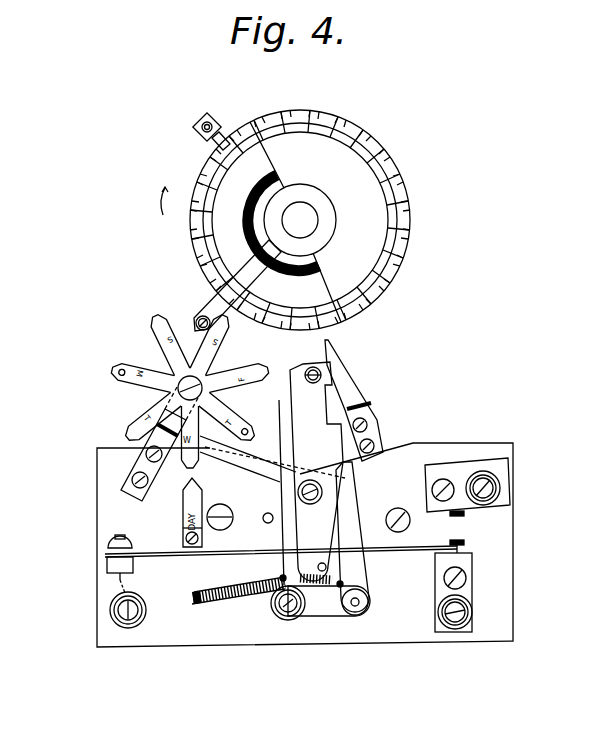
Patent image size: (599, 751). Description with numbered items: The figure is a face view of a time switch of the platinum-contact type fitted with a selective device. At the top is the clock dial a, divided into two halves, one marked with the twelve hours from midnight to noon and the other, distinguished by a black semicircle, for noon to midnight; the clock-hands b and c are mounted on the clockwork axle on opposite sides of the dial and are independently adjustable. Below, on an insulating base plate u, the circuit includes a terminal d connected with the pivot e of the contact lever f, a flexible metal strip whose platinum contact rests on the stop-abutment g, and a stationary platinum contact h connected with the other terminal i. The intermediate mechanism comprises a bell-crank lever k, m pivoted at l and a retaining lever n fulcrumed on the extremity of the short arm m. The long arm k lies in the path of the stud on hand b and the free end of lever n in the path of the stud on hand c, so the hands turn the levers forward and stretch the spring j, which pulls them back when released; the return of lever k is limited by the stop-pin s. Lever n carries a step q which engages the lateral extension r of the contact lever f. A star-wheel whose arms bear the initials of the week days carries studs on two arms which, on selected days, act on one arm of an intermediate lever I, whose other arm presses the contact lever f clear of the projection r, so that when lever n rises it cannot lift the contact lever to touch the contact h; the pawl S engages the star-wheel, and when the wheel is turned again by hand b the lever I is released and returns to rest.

The clock dial a is at (343, 118).
The clock-hand b is at (205, 316).
The clock-hand c is at (218, 130).
The terminal d is at (136, 628).
The pivot e is at (110, 547).
The contact lever f is at (402, 552).
The stop-abutment g is at (468, 572).
The stationary platinum contact h is at (463, 517).
The terminal i is at (500, 491).
The spring j is at (238, 600).
The long arm of bell-crank lever k is at (284, 367).
The pivot of bell-crank lever l is at (295, 647).
The short arm of bell-crank lever m is at (338, 608).
The retaining lever n is at (348, 532).
The shoulder or step q is at (342, 508).
The lateral extension of contact lever r is at (297, 547).
The stop-pin s is at (265, 514).
The base plate u is at (107, 450).
The intermediate lever I is at (224, 468).
The pawl S is at (347, 384).